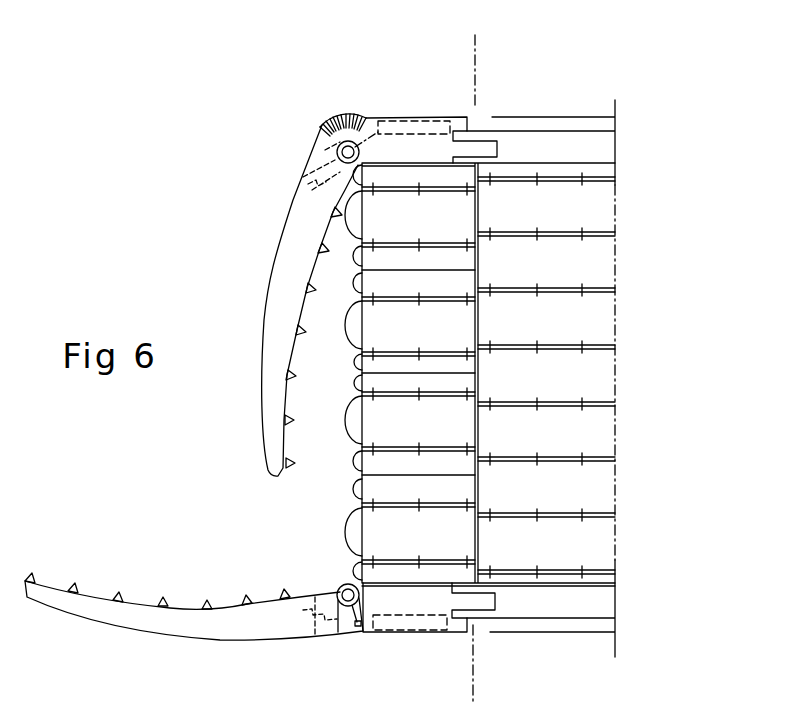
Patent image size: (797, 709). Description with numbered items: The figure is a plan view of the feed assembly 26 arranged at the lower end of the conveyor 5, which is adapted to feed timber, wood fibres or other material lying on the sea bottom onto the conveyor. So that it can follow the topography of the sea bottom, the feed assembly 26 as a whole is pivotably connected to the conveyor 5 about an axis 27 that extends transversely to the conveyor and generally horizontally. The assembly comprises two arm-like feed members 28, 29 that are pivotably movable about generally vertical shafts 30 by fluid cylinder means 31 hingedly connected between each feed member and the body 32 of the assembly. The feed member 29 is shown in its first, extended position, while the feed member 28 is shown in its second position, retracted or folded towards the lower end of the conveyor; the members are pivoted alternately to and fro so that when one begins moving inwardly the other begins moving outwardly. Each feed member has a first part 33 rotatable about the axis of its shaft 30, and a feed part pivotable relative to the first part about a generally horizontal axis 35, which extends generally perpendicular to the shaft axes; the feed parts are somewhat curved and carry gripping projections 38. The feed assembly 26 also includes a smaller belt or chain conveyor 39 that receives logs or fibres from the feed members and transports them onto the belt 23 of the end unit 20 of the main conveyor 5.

The conveyor 5 is at (598, 108).
The end unit 20 is at (527, 205).
The belt 23 is at (582, 333).
The feed assembly 26 is at (349, 88).
The axis 27 is at (477, 58).
The feed member 28 is at (270, 280).
The feed member 29 is at (142, 598).
The shaft 30 is at (338, 148).
The fluid cylinder means 31 is at (424, 130).
The body 32 is at (386, 120).
The first part 33 is at (338, 632).
The axis 35 is at (293, 181).
The gripping projections 38 is at (75, 591).
The conveyor 39 is at (344, 446).